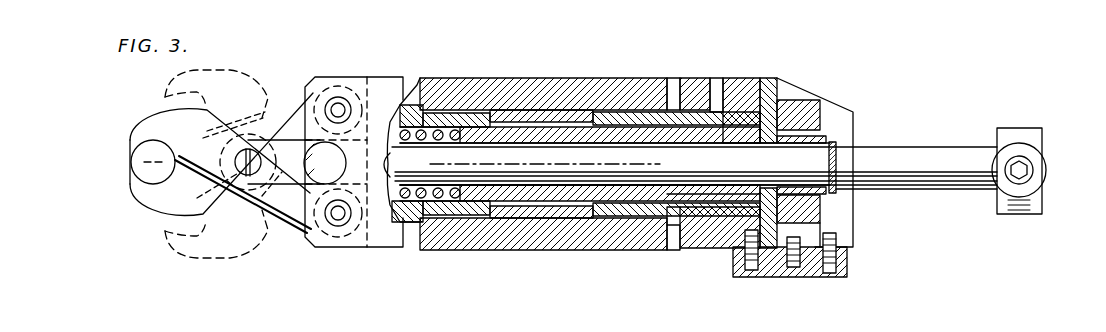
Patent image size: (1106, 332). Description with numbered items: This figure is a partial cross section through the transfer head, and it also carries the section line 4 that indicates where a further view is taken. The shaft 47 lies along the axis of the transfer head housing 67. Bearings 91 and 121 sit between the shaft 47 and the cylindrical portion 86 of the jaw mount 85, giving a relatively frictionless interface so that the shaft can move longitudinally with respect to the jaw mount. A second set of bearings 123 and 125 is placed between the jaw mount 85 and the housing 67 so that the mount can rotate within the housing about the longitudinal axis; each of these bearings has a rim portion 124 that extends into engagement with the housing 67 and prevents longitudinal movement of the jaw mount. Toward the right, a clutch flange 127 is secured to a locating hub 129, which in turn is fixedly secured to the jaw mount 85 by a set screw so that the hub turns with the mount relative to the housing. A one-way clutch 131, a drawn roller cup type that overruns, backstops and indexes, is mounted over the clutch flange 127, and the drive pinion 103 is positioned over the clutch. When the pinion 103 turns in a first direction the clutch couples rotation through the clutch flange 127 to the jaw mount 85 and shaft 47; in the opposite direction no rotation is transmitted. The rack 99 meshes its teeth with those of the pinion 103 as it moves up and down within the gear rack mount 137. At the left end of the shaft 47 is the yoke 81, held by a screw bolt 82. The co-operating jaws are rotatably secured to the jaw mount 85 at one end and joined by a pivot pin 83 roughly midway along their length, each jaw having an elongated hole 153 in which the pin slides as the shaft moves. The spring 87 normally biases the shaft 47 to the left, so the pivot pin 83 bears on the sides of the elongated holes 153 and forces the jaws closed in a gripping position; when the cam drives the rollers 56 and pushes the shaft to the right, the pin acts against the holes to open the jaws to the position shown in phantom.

The section line 4- 4 is at (90, 132).
The shaft 47 is at (932, 170).
The rollers 56 is at (1046, 170).
The transfer head housing 67 is at (560, 107).
The yoke 81 is at (297, 182).
The screw bolt 82 is at (367, 240).
The pivot pin 83 is at (257, 138).
The jaw mount 85 is at (348, 78).
The cylindrical portion 86 is at (563, 130).
The spring 87 is at (461, 194).
The bearing 91 is at (521, 205).
The rack 99 is at (800, 254).
The drive gear or pinion 103 is at (812, 108).
The bearing 121 is at (712, 208).
The bearing 123 is at (408, 103).
The rim portion 124 is at (435, 80).
The bearing 125 is at (658, 78).
The clutch flange 127 is at (772, 80).
The locating hub 129 is at (728, 78).
The one-way clutch 131 is at (828, 136).
The gear rack mount 137 is at (787, 278).
The elongated hole 153 is at (210, 185).